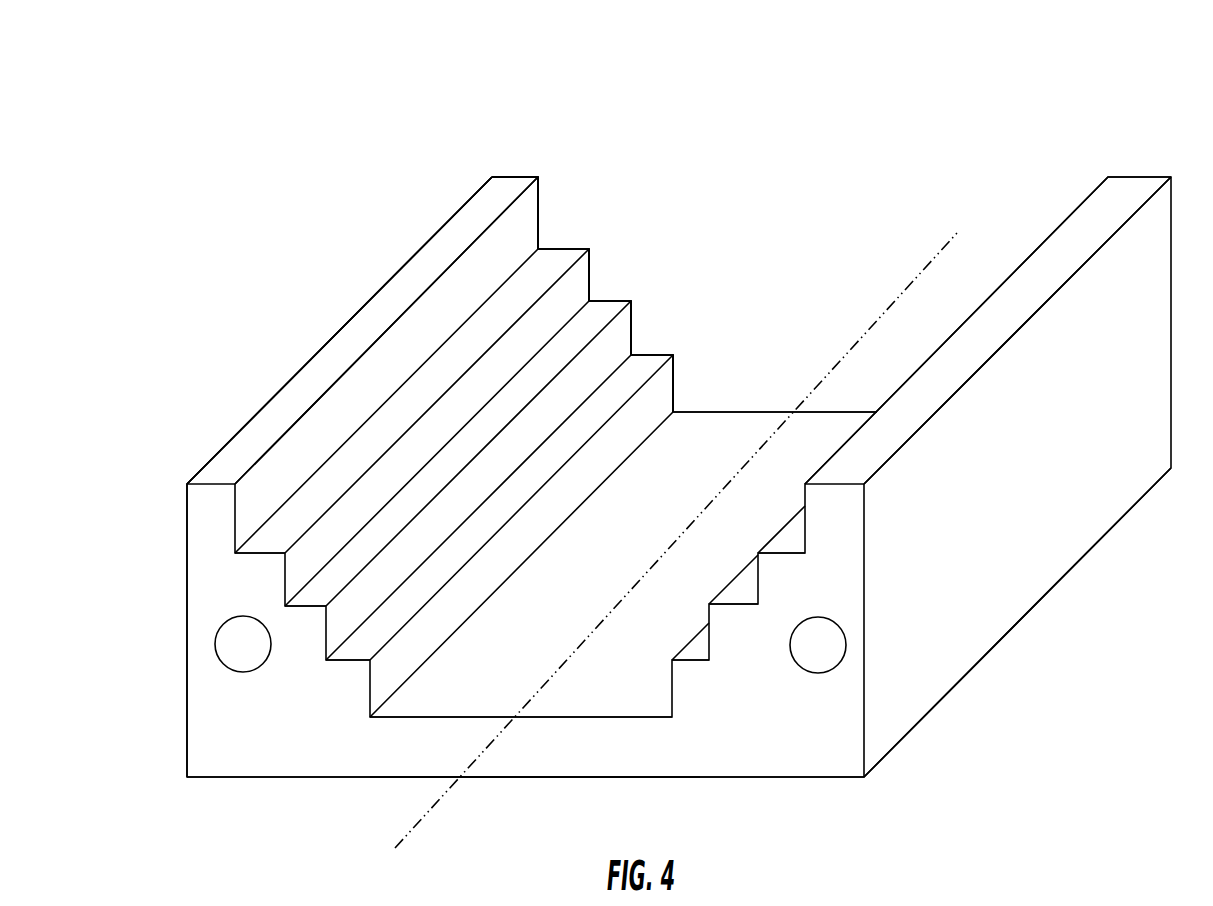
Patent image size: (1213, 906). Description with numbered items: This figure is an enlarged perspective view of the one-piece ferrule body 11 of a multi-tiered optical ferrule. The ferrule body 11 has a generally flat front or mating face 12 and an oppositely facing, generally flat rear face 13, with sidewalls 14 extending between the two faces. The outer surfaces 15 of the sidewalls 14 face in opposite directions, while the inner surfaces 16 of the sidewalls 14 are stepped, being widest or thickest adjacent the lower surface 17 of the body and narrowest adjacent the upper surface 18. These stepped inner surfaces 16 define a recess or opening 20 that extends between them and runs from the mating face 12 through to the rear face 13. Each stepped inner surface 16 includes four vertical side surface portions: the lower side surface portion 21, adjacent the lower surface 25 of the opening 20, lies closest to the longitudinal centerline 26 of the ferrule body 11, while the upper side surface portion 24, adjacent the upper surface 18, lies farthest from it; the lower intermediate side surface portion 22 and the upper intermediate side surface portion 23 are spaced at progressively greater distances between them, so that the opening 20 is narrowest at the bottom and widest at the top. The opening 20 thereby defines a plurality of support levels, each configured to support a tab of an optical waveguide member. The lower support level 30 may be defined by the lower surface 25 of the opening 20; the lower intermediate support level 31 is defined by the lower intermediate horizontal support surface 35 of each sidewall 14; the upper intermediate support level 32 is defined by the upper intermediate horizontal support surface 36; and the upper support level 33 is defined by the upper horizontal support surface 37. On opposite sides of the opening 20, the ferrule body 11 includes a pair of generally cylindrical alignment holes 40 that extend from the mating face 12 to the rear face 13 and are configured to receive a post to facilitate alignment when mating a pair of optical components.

The ferrule body 11 is at (1120, 522).
The mating face 12 is at (735, 768).
The rear face 13 is at (743, 411).
The sidewalls 14 is at (347, 328).
The outer surfaces 15 is at (252, 418).
The inner surfaces 16 is at (660, 110).
The lower surface 17 is at (523, 768).
The upper surface 18 is at (388, 290).
The opening 20 is at (860, 172).
The lower side surface portion 21 is at (675, 390).
The lower intermediate side surface portion 22 is at (632, 330).
The upper intermediate side surface portion 23 is at (590, 278).
The upper side surface portion 24 is at (540, 213).
The lower surface of the opening 25 is at (428, 718).
The longitudinal centerline 26 is at (890, 300).
The lower support level 30 is at (761, 342).
The lower intermediate support level 31 is at (686, 318).
The upper intermediate support level 32 is at (660, 250).
The upper support level 33 is at (606, 200).
The lower intermediate horizontal support surface 35 is at (352, 663).
The upper intermediate horizontal support surface 36 is at (317, 609).
The upper horizontal support surface 37 is at (267, 557).
The alignment holes 40 is at (232, 670).